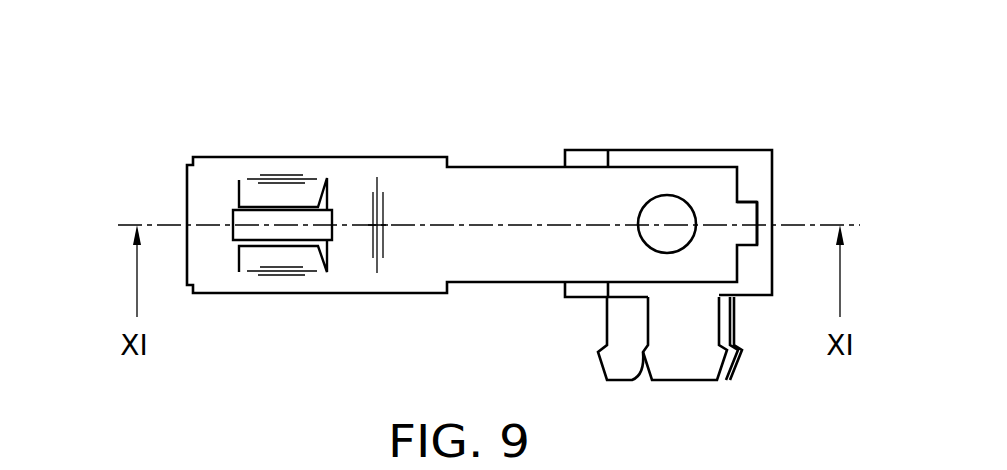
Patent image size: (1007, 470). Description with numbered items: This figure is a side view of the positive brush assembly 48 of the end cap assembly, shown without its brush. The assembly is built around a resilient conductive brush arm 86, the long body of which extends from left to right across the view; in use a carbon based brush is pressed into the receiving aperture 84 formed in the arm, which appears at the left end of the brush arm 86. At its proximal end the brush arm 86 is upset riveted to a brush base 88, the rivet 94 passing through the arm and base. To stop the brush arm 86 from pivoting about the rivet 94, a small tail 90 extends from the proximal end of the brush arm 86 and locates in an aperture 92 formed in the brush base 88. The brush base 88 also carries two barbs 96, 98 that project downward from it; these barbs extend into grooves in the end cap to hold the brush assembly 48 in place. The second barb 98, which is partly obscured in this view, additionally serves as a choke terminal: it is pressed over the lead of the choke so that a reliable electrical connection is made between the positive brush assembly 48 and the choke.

The positive brush assembly 48 is at (186, 81).
The receiving aperture 84 is at (278, 215).
The brush arm 86 is at (487, 208).
The brush base 88 is at (765, 165).
The tail 90 is at (743, 215).
The aperture 92 is at (767, 212).
The rivet 94 is at (662, 210).
The barb 96 is at (695, 353).
The second barb 98 is at (622, 325).